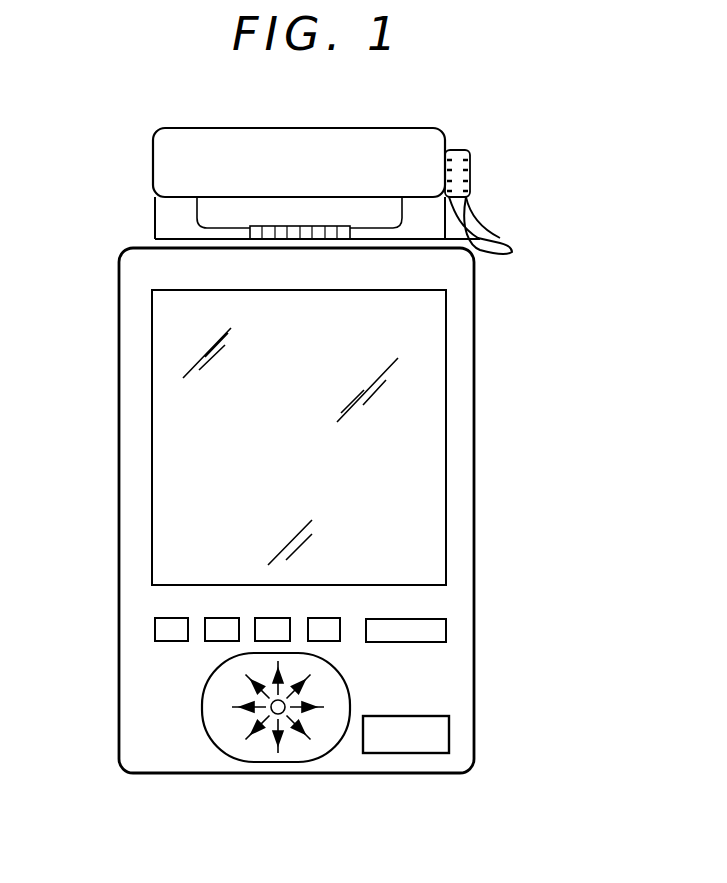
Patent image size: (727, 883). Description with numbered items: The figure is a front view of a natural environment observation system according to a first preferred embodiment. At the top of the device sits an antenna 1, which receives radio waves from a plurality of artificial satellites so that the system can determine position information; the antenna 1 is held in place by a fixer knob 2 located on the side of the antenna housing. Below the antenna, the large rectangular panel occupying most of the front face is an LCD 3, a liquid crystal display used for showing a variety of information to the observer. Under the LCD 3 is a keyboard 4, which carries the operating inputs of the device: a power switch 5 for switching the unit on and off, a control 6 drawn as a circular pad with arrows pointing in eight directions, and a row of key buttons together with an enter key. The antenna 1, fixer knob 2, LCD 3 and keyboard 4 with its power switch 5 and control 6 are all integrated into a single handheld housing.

The antenna 1 is at (427, 143).
The fixer knob 2 is at (287, 244).
The LCD 3 is at (431, 481).
The keyboard 4 is at (440, 703).
The power switch 5 is at (447, 626).
The control 6 is at (333, 730).